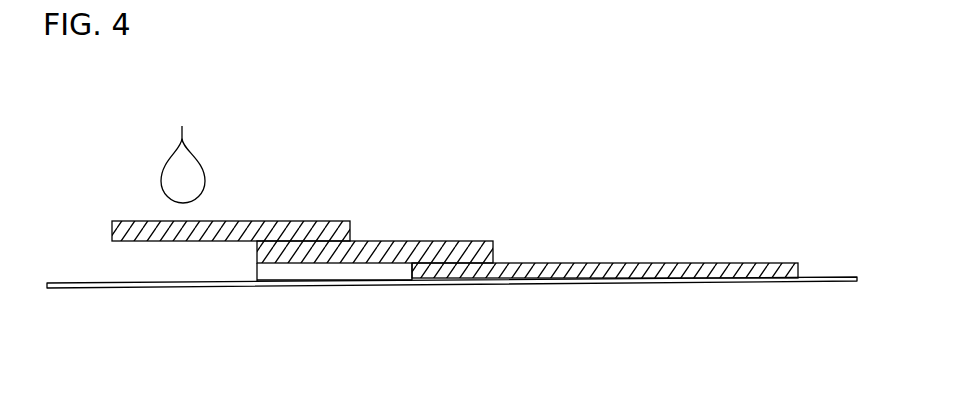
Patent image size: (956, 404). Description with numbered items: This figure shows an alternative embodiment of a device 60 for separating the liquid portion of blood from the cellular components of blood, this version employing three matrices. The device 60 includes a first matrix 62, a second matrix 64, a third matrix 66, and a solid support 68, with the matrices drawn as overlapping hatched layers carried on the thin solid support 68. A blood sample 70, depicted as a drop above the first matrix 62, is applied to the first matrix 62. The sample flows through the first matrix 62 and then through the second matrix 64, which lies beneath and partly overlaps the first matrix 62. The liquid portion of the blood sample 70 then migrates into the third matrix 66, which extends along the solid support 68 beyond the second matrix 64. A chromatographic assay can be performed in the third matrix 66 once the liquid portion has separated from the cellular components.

The device 60 is at (722, 182).
The first matrix 62 is at (118, 228).
The second matrix 64 is at (278, 252).
The third matrix 66 is at (578, 268).
The solid support 68 is at (117, 289).
The blood sample 70 is at (182, 182).